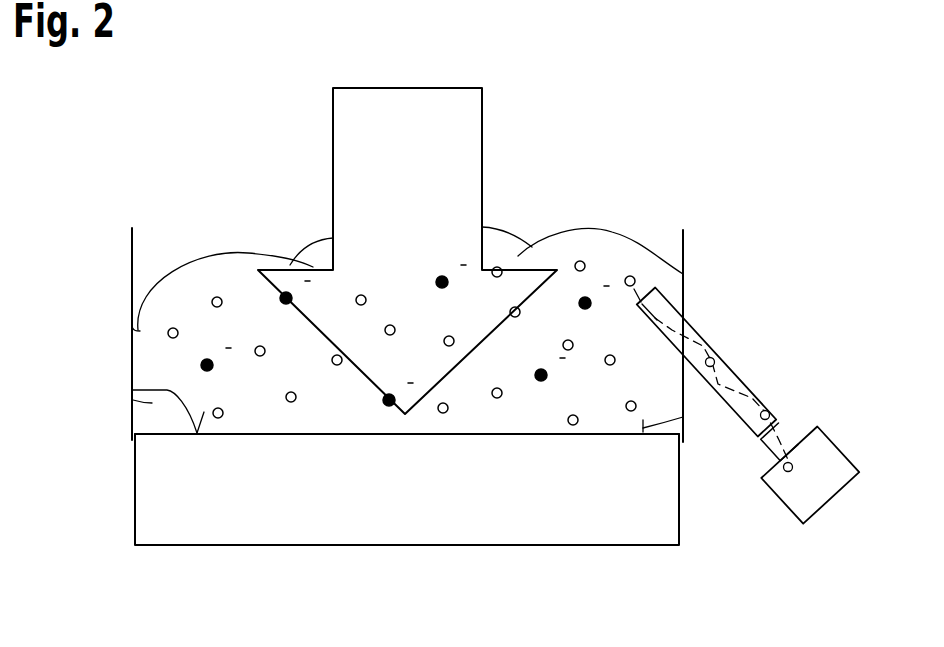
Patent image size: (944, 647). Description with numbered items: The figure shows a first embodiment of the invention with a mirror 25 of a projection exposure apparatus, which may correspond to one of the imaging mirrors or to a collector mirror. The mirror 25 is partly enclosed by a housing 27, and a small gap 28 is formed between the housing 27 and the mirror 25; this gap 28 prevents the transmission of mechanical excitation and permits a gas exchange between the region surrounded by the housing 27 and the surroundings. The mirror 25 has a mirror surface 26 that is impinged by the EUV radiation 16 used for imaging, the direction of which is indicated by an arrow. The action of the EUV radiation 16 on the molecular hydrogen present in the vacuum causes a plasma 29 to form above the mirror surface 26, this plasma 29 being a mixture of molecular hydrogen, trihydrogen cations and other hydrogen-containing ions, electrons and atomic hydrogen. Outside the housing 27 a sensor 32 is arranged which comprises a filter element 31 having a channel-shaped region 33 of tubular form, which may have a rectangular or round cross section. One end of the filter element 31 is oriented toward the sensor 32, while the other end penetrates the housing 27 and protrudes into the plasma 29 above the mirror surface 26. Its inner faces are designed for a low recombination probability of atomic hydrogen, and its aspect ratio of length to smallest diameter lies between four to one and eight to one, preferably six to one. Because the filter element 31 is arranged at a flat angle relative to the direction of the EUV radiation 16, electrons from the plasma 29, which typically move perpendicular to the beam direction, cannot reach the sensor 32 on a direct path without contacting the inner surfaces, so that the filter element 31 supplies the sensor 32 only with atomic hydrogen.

The EUV radiation 16 is at (417, 88).
The mirror 25 is at (543, 546).
The mirror surface 26 is at (132, 390).
The housing 27 is at (132, 252).
The gap 28 is at (135, 440).
The plasma 29 is at (568, 247).
The filter element 31 is at (740, 371).
The sensor 32 is at (845, 490).
The channel-shaped region 33 is at (727, 369).